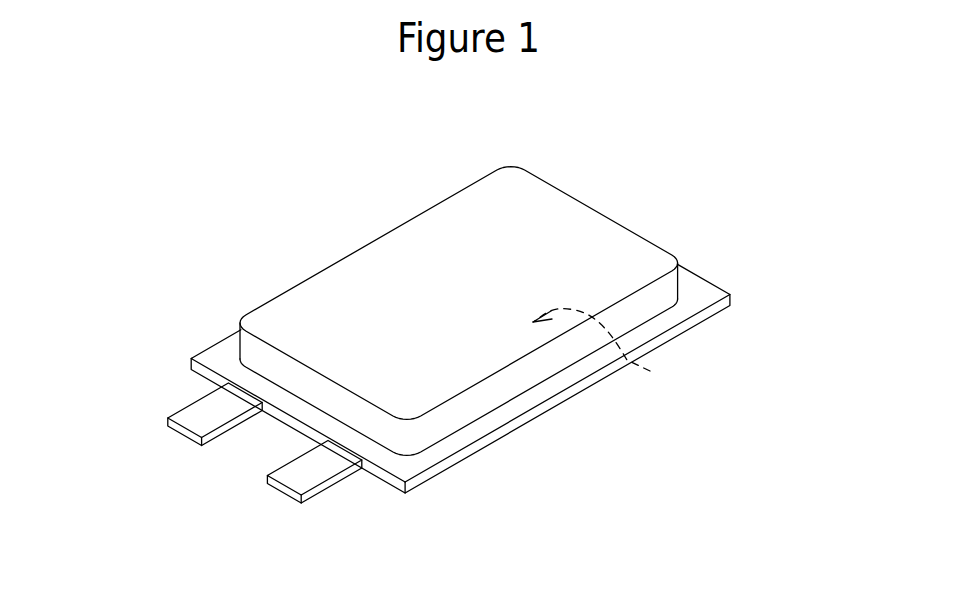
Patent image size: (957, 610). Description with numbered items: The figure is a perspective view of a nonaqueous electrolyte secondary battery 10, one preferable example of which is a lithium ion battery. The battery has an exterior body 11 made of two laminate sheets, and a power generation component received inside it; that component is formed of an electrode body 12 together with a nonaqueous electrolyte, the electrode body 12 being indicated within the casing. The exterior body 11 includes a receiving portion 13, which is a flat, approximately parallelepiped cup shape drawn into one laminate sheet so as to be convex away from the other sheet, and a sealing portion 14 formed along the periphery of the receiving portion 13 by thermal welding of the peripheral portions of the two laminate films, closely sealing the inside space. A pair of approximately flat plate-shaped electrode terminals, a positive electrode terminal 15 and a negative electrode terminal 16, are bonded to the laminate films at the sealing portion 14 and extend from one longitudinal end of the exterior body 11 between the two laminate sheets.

The nonaqueous electrolyte secondary battery 10 is at (701, 138).
The exterior body 11 is at (688, 267).
The electrode body 12 is at (650, 371).
The receiving portion 13 is at (323, 295).
The sealing portion 14 is at (218, 348).
The positive electrode terminal 15 is at (293, 482).
The negative electrode terminal 16 is at (197, 425).